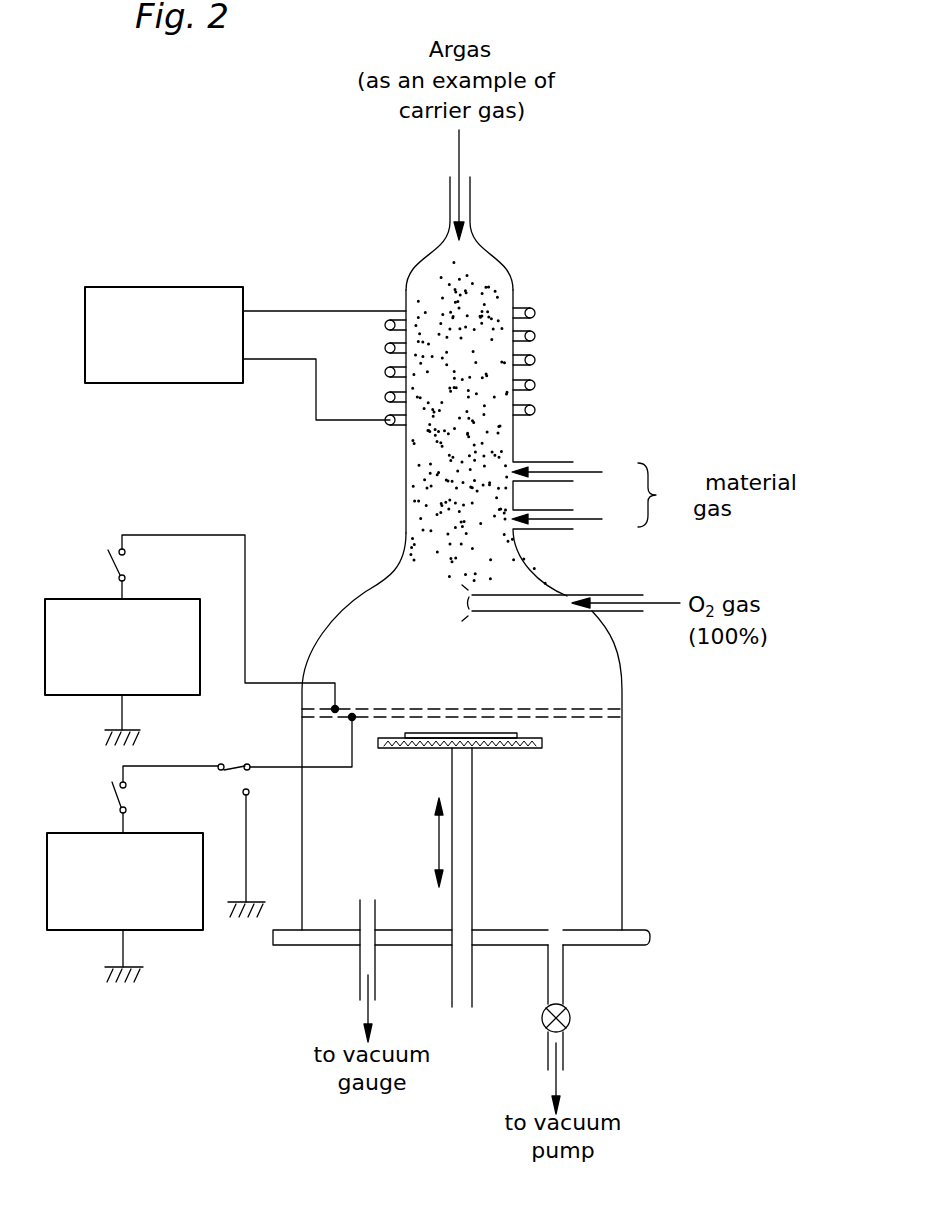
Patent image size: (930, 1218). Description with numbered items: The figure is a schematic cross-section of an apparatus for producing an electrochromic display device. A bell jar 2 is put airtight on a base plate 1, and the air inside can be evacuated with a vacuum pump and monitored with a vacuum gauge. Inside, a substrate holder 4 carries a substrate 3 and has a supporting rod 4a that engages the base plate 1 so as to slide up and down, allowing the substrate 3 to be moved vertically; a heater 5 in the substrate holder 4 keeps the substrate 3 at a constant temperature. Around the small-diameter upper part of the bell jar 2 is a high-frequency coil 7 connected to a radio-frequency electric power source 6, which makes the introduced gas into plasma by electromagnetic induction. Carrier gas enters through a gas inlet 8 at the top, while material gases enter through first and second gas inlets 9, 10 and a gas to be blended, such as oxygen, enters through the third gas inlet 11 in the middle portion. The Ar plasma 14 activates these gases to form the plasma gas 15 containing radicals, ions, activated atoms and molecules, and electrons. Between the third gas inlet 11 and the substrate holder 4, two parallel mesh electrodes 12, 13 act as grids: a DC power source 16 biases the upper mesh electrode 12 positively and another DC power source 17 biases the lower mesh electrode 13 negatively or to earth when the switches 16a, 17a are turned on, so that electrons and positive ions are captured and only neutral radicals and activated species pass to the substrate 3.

The base plate 1 is at (638, 945).
The bell jar 2 is at (622, 826).
The substrate 3 is at (502, 733).
The substrate holder 4 is at (492, 748).
The supporting rod 4a is at (467, 870).
The heater 5 is at (538, 748).
The radio-frequency electric power source 6 is at (165, 287).
The high-frequency coil 7 is at (536, 336).
The gas inlet 8 is at (468, 200).
The first gas inlet 9 is at (540, 463).
The second gas inlet 10 is at (548, 529).
The third gas inlet 11 is at (523, 600).
The upper mesh electrode 12 is at (583, 708).
The lower mesh electrode 13 is at (595, 720).
The Ar plasma 14 is at (455, 405).
The plasma gas 15 is at (458, 557).
The DC power source 16 is at (82, 695).
The switch 16a is at (108, 568).
The DC power source 17 is at (82, 930).
The switch 17a is at (112, 793).